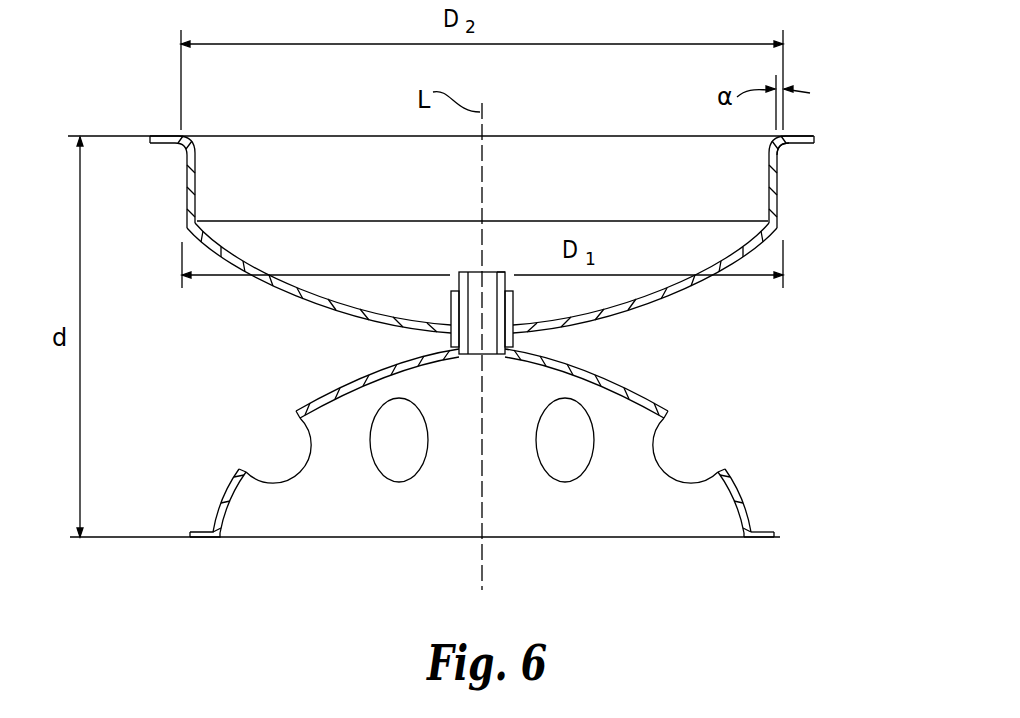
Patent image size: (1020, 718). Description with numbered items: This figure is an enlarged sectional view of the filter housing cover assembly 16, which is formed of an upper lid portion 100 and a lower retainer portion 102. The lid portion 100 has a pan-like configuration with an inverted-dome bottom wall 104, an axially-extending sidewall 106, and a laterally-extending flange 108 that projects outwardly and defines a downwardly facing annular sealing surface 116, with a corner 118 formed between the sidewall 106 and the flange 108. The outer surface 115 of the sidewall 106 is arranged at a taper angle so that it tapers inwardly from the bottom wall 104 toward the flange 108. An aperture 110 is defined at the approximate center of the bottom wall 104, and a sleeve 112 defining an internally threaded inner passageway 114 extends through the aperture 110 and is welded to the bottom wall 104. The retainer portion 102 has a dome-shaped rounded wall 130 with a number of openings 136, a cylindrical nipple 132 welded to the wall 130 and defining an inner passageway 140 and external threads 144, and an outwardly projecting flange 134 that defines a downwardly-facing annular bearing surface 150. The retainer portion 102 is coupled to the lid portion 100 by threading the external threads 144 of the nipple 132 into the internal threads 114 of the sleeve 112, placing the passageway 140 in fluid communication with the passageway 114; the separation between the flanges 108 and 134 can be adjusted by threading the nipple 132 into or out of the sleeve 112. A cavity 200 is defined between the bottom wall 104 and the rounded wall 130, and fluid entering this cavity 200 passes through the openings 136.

The filter housing cover assembly 16 is at (200, 356).
The upper lid portion 100 is at (172, 205).
The lower retainer portion 102 is at (200, 457).
The bottom wall portion 104 is at (688, 298).
The sidewall portion 106 is at (792, 193).
The flange element 108 is at (803, 127).
The aperture 110 is at (451, 306).
The sleeve 112 is at (516, 318).
The inner passageway 114 is at (492, 340).
The outer surface 115 is at (181, 188).
The annular sealing surface 116 is at (150, 147).
The corner 118 is at (787, 152).
The rounded wall portion 130 is at (671, 392).
The nipple 132 is at (445, 337).
The flange element 134 is at (770, 517).
The openings 136 is at (537, 452).
The inner passageway 140 is at (476, 266).
The external threads 144 is at (508, 282).
The annular bearing surface 150 is at (765, 540).
The cavity 200 is at (356, 350).